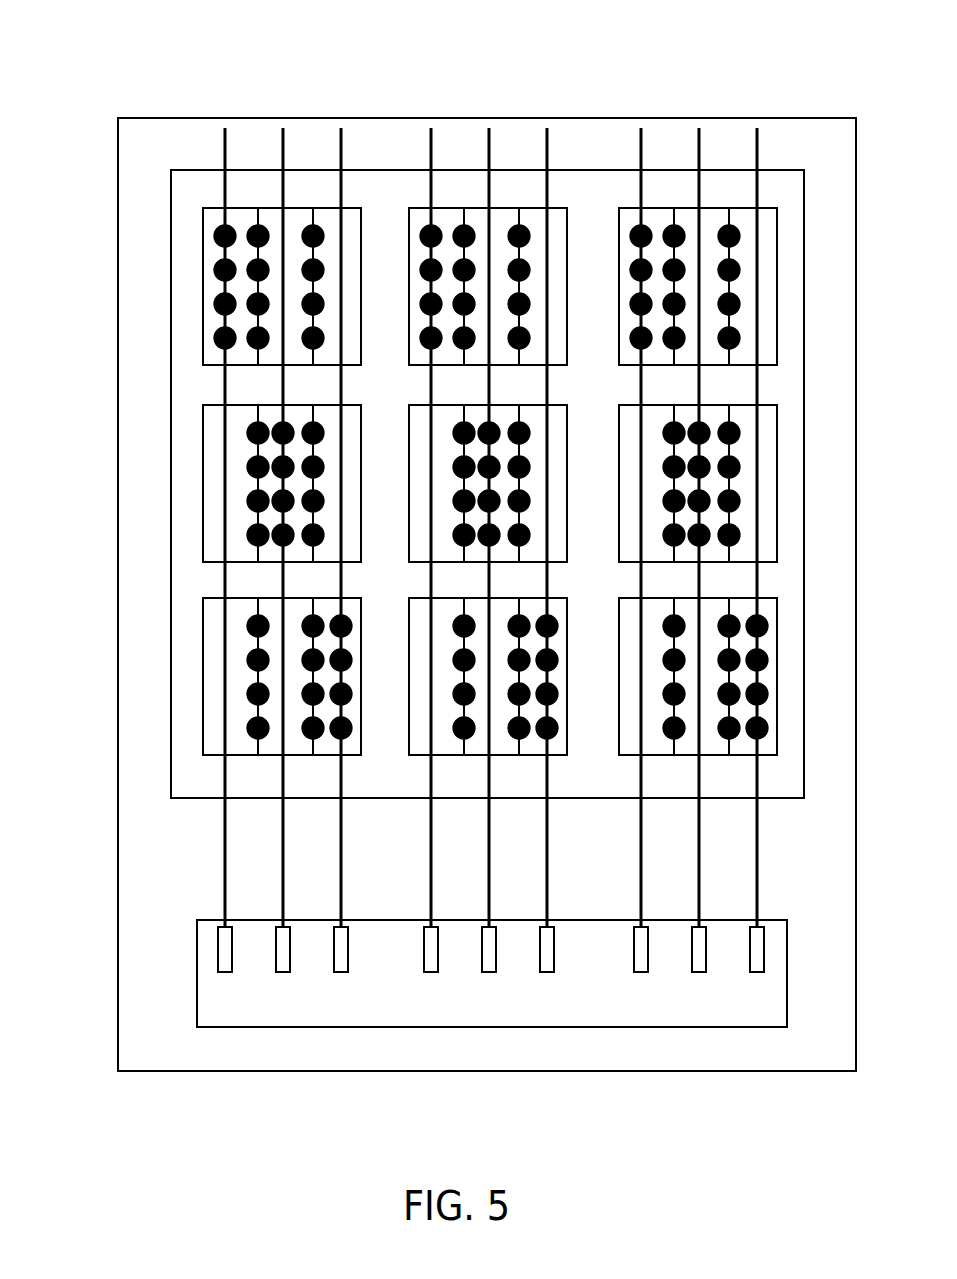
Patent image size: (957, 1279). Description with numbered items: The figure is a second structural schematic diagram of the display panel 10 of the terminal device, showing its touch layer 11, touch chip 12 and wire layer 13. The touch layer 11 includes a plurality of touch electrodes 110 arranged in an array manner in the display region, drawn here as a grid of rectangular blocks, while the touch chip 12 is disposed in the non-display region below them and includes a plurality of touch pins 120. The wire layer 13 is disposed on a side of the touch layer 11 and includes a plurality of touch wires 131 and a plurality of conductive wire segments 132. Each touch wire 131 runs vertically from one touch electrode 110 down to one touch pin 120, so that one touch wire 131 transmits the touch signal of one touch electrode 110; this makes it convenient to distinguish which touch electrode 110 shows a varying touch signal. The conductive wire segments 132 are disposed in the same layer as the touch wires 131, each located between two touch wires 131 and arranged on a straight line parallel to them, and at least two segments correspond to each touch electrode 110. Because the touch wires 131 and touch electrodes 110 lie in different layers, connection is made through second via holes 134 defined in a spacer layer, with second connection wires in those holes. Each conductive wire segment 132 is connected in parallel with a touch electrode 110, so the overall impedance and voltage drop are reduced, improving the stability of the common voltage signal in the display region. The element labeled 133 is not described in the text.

The display panel 10 is at (90, 22).
The touch layer 11 is at (393, 70).
The touch electrode 110 is at (353, 219).
The touch chip 12 is at (320, 1128).
The touch pin 120 is at (224, 962).
The wire layer 13 is at (763, 70).
The touch wire 131 is at (699, 130).
The conductive wire segment 132 is at (729, 208).
The contact 133 is at (255, 230).
The second via hole 134 is at (218, 231).